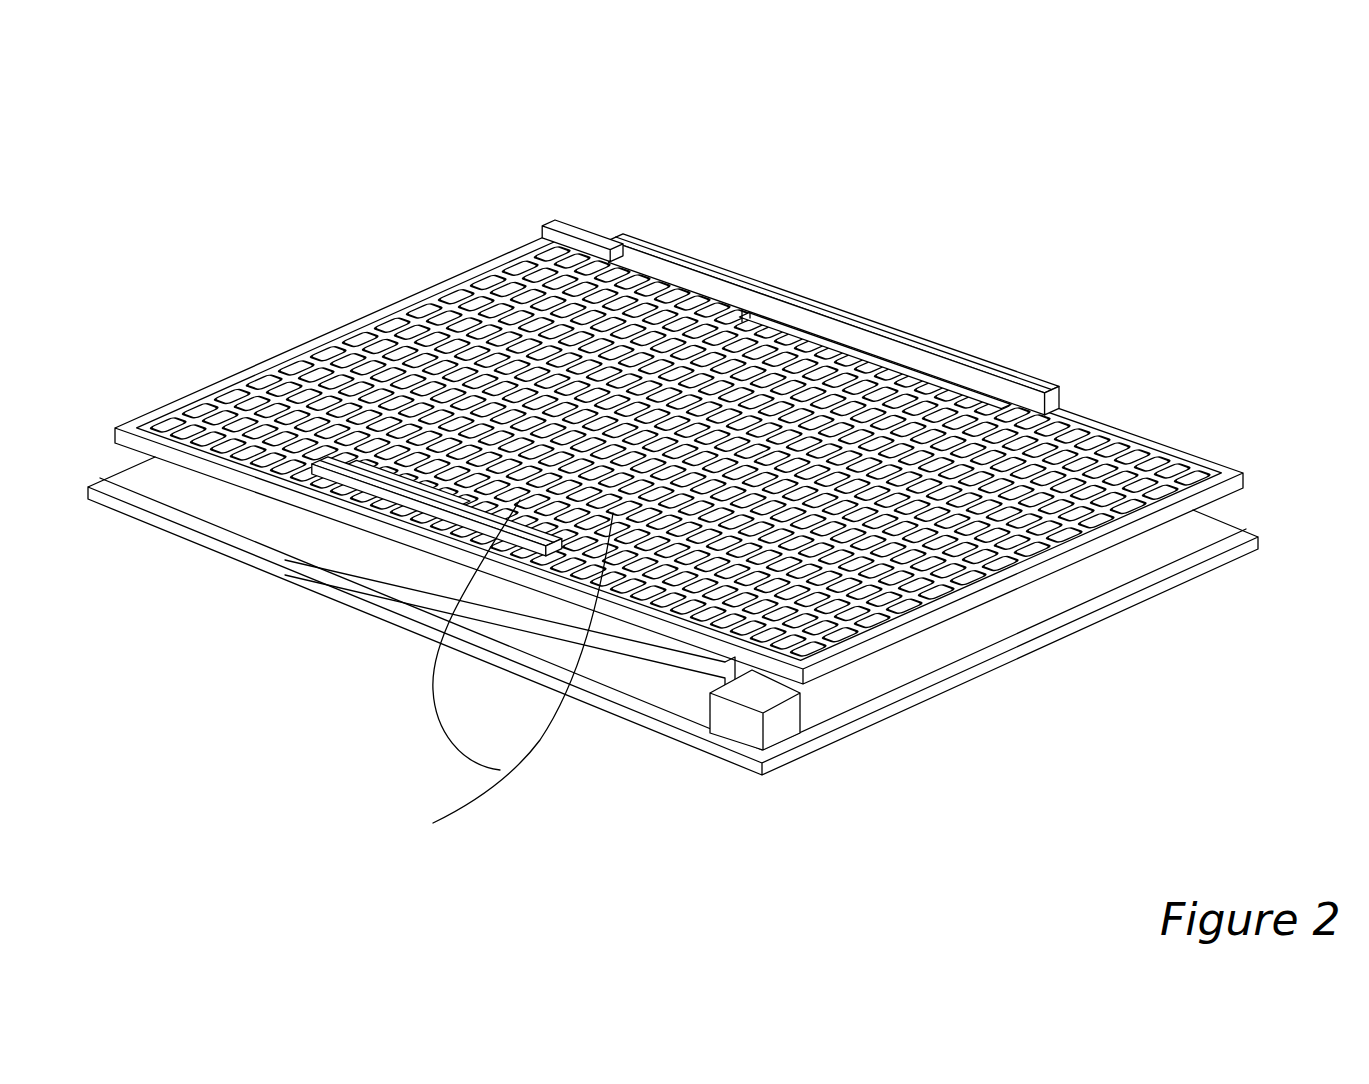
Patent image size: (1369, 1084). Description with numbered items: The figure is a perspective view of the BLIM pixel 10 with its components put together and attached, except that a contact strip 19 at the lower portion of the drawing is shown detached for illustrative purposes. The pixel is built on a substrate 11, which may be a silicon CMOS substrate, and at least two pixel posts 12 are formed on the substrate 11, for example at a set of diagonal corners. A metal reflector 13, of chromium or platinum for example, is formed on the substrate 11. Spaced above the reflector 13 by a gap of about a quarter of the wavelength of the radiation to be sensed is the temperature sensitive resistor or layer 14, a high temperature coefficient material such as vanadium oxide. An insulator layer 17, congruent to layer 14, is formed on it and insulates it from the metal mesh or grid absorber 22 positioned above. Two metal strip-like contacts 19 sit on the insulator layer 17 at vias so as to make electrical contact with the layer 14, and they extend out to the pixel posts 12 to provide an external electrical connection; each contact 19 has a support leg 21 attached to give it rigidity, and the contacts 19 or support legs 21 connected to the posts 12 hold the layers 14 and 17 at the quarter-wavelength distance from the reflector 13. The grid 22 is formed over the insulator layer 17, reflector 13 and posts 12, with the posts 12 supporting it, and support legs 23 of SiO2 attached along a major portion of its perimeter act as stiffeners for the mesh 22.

The BLIM pixel 10 is at (1023, 175).
The substrate 11 is at (1258, 545).
The pixel posts 12 is at (597, 232).
The metal reflector 13 is at (1227, 525).
The temperature sensitive resistor layer 14 is at (358, 510).
The insulator layer 17 is at (531, 565).
The metal strip-like contacts 19 is at (958, 415).
The support leg 21 is at (858, 325).
The metal mesh or grid absorber 22 is at (263, 398).
The support legs 23 is at (352, 332).